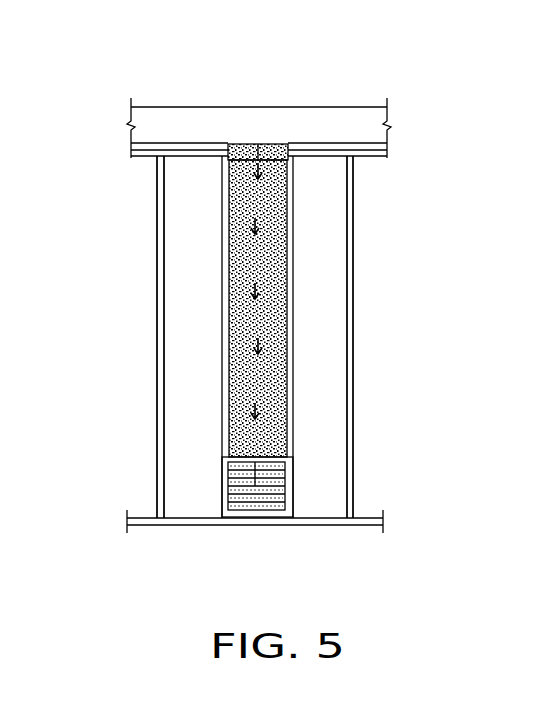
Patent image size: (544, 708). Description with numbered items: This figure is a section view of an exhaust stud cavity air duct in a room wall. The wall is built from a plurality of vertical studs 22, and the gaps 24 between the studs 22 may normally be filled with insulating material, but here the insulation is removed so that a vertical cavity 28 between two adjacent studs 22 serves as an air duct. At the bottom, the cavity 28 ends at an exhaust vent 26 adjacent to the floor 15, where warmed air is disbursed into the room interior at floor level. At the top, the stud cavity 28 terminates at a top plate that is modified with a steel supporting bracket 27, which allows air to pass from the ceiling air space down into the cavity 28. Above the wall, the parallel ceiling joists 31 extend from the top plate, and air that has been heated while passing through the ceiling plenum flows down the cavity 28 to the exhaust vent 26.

The floor 15 is at (182, 522).
The vertical studs 22 is at (160, 338).
The gaps 24 is at (200, 208).
The exhaust vent 26 is at (292, 482).
The steel supporting bracket 27 is at (271, 145).
The vertical cavity 28 is at (292, 338).
The joists 31 is at (363, 127).